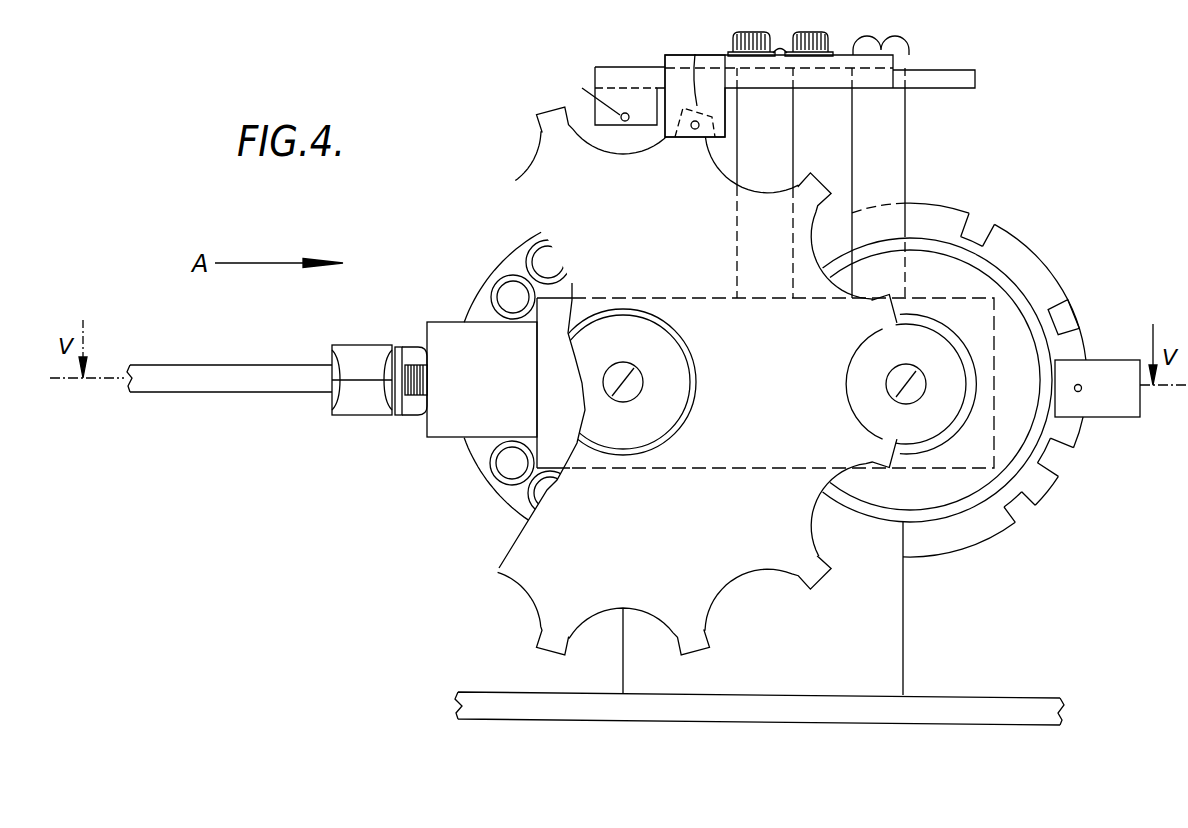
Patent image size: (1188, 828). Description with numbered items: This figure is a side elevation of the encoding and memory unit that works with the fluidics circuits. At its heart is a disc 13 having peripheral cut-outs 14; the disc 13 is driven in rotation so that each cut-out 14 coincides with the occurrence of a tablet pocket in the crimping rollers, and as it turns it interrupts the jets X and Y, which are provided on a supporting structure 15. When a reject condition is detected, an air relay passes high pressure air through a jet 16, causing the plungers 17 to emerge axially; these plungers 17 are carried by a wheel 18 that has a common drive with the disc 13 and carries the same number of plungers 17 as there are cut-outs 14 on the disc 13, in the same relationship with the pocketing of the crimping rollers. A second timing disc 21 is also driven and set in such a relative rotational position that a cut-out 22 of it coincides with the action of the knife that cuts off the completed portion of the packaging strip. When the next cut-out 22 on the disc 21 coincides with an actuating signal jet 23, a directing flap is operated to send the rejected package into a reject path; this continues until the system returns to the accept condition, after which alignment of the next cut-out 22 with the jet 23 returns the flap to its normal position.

The disc 13 is at (548, 148).
The peripheral cut-outs 14 is at (743, 620).
The supporting structure 15 is at (838, 78).
The jet 16 is at (365, 353).
The plungers 17 is at (500, 292).
The wheel 18 is at (525, 263).
The second timing disc 21 is at (1017, 250).
The cut-out 22 is at (979, 225).
The actuating signal jet 23 is at (1082, 387).